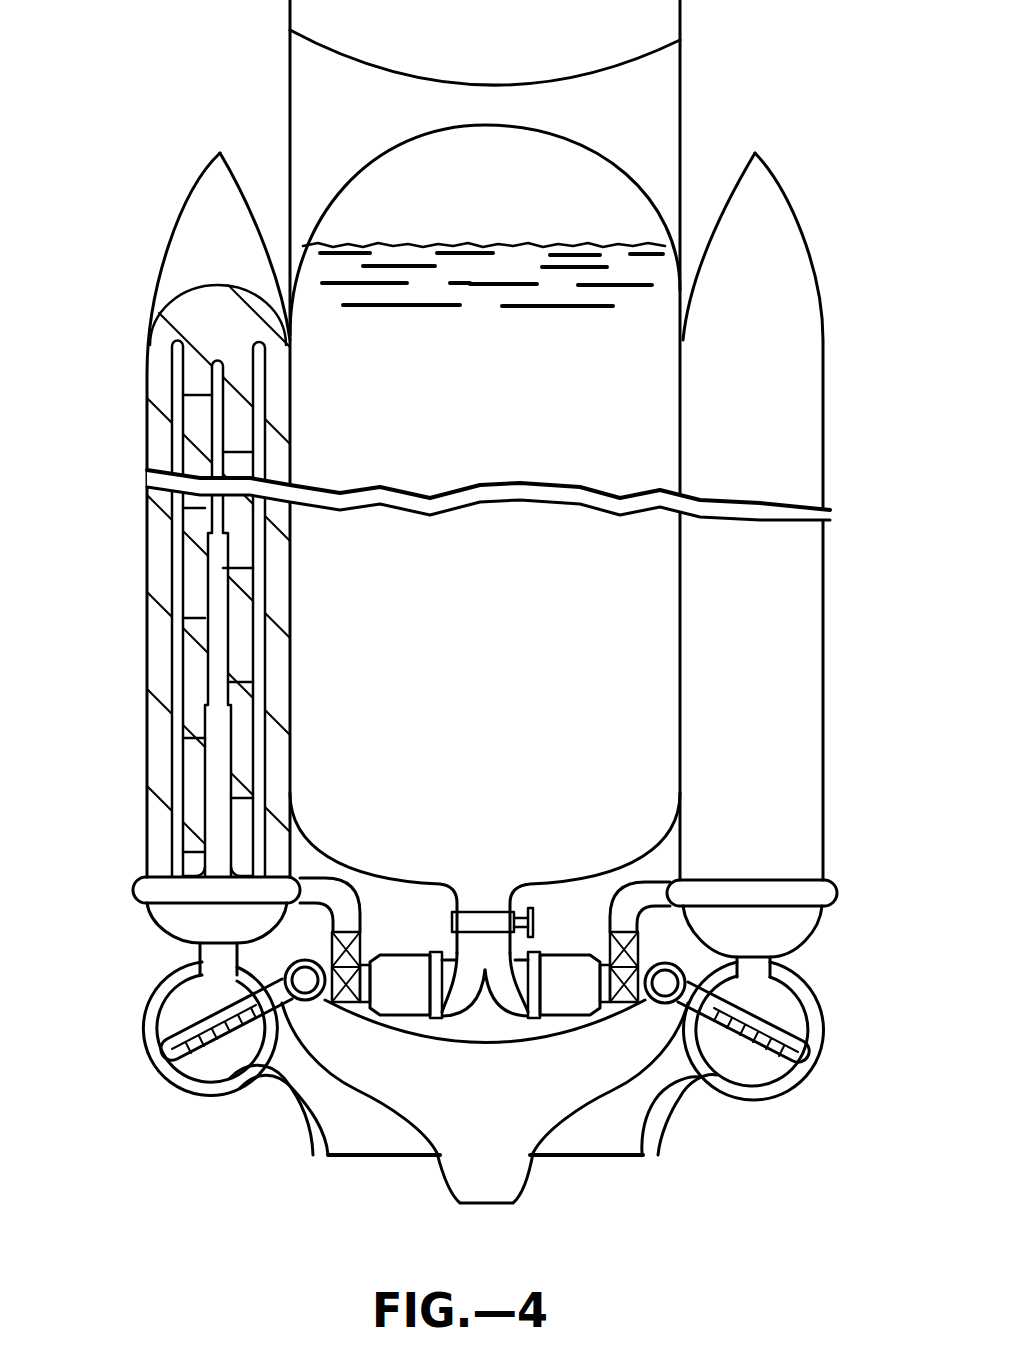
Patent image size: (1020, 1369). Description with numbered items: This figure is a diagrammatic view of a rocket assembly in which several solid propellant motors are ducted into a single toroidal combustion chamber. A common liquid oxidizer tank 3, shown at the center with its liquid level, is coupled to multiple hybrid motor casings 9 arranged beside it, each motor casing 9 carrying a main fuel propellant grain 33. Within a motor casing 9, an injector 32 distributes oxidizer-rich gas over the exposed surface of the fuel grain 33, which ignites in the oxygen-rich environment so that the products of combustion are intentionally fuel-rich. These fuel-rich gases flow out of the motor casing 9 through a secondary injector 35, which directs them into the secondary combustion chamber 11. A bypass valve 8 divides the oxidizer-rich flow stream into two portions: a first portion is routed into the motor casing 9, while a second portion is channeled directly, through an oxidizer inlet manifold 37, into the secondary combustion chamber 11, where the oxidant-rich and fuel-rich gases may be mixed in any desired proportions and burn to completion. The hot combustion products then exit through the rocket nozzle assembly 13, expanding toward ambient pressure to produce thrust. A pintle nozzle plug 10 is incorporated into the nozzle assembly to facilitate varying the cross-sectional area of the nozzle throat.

The fluid oxidizer tank 3 is at (587, 243).
The bypass valve 8 is at (346, 1002).
The main motor casing 9 is at (826, 395).
The pintle nozzle plug 10 is at (423, 1138).
The secondary combustion chamber 11 is at (730, 1046).
The rocket nozzle assembly 13 is at (321, 1149).
The injector 32 is at (175, 540).
The main fuel propellant grain 33 is at (150, 608).
The secondary injector 35 is at (188, 948).
The oxidizer inlet manifold 37 is at (222, 1032).